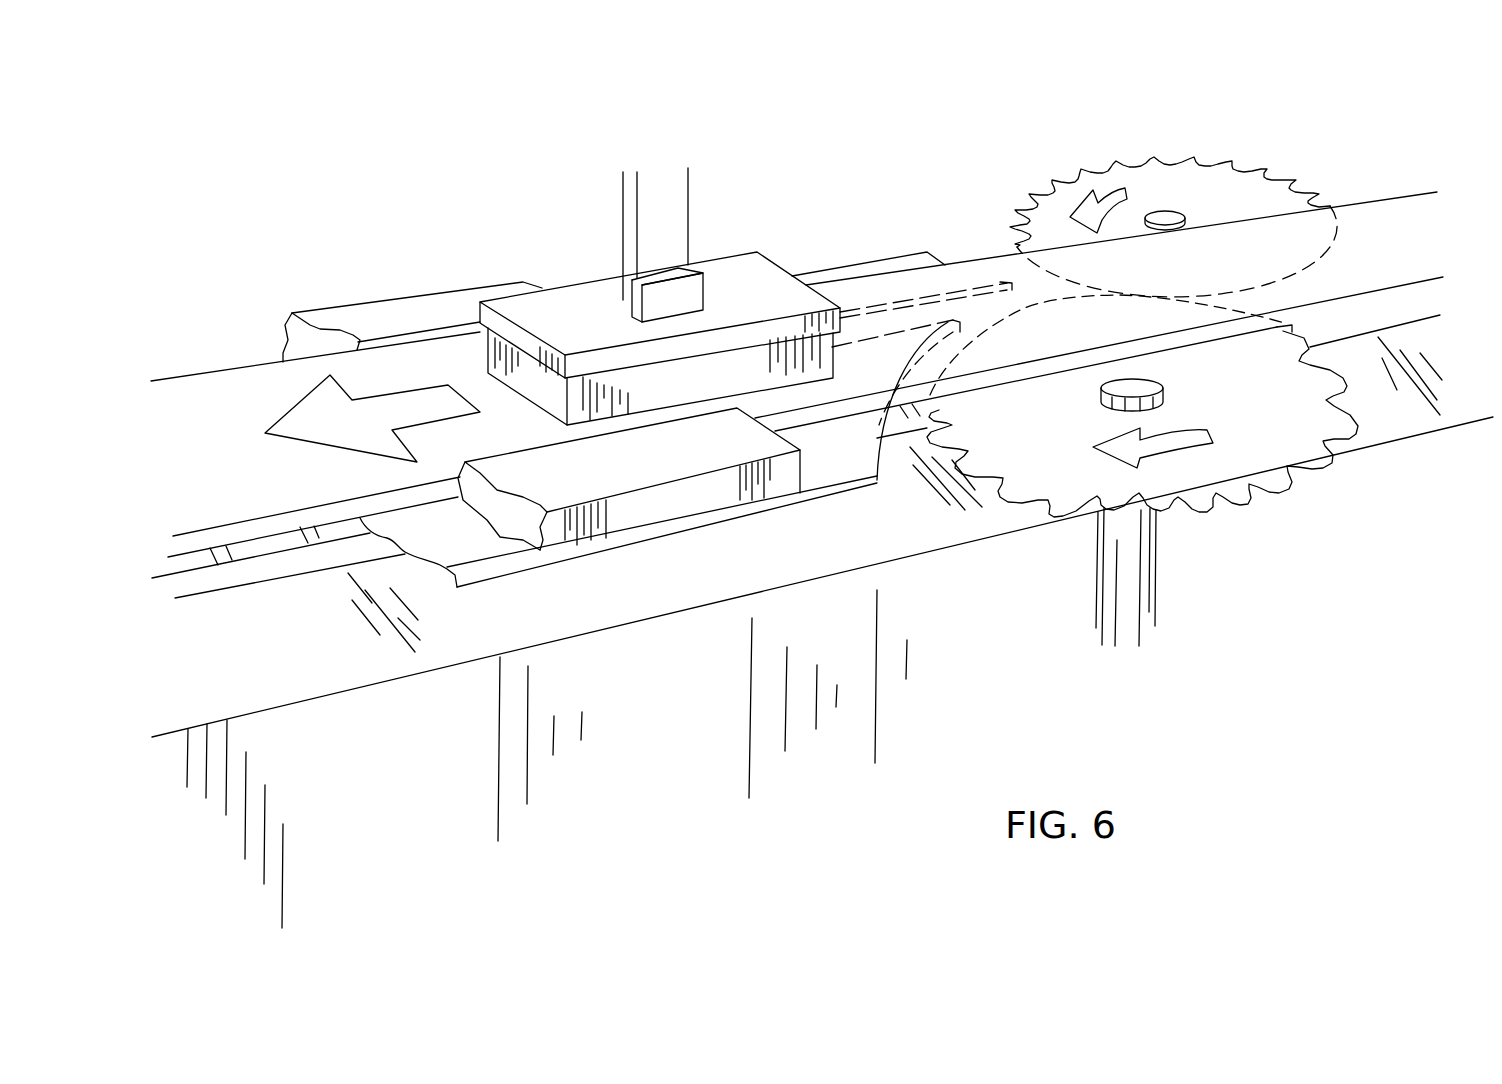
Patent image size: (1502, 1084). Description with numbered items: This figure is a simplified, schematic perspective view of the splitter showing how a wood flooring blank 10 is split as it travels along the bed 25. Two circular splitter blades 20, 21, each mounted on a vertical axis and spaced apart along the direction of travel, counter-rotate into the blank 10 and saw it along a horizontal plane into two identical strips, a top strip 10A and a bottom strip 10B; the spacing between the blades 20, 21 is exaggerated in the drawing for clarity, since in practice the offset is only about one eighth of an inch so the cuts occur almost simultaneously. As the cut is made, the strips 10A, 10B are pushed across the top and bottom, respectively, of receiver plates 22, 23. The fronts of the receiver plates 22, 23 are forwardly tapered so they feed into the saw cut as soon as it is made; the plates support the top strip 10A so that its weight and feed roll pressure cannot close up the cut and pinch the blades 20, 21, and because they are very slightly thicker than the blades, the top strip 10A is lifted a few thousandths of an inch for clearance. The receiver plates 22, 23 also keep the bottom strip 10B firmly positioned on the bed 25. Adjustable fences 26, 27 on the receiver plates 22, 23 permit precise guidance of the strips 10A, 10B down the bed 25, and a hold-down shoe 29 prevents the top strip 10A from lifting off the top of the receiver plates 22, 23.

The blank 10 is at (1383, 252).
The top strip 10A is at (235, 390).
The bottom strip 10B is at (300, 560).
The splitter blade 20 is at (1220, 190).
The splitter blade 21 is at (1358, 433).
The receiver plate 22 is at (860, 272).
The receiver plate 23 is at (877, 487).
The bed 25 is at (775, 558).
The adjustable fence 26 is at (406, 312).
The adjustable fence 27 is at (640, 510).
The hold-down shoe 29 is at (733, 285).